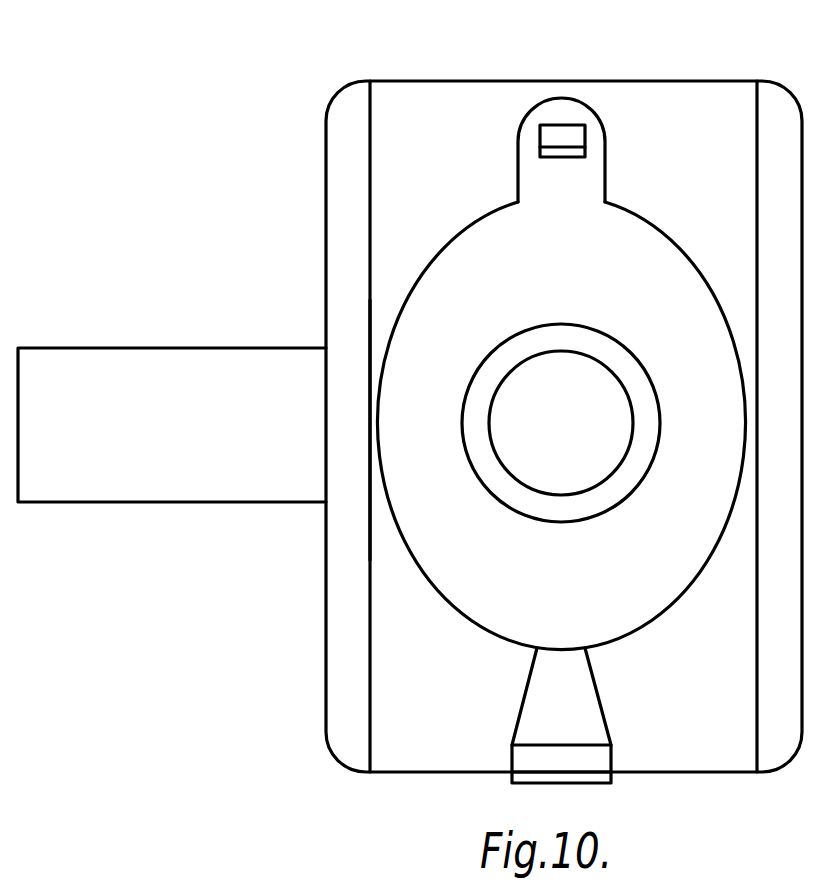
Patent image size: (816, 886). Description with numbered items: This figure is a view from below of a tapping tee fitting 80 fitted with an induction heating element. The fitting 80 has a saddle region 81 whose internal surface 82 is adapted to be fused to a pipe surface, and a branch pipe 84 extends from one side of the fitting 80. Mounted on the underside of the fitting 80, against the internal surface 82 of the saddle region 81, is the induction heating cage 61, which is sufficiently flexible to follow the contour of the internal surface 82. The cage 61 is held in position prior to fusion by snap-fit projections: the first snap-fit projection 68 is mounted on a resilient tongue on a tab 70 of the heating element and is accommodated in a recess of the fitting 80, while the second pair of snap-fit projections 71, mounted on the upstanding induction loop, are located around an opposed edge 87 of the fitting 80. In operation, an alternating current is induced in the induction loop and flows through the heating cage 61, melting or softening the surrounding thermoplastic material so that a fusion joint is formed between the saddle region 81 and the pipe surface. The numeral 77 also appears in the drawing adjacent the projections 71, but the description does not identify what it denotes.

The tapping tee fitting 80 is at (673, 63).
The cage 61 is at (407, 313).
The first snap-fit projection 68 is at (547, 138).
The tab 70 is at (562, 112).
The second pair of snap-fit projections 71 is at (510, 774).
The nozzle tip 77 is at (614, 774).
The saddle region 81 is at (700, 773).
The internal surface 82 is at (456, 692).
The branch pipe 84 is at (198, 463).
The opposed edge 87 is at (420, 774).